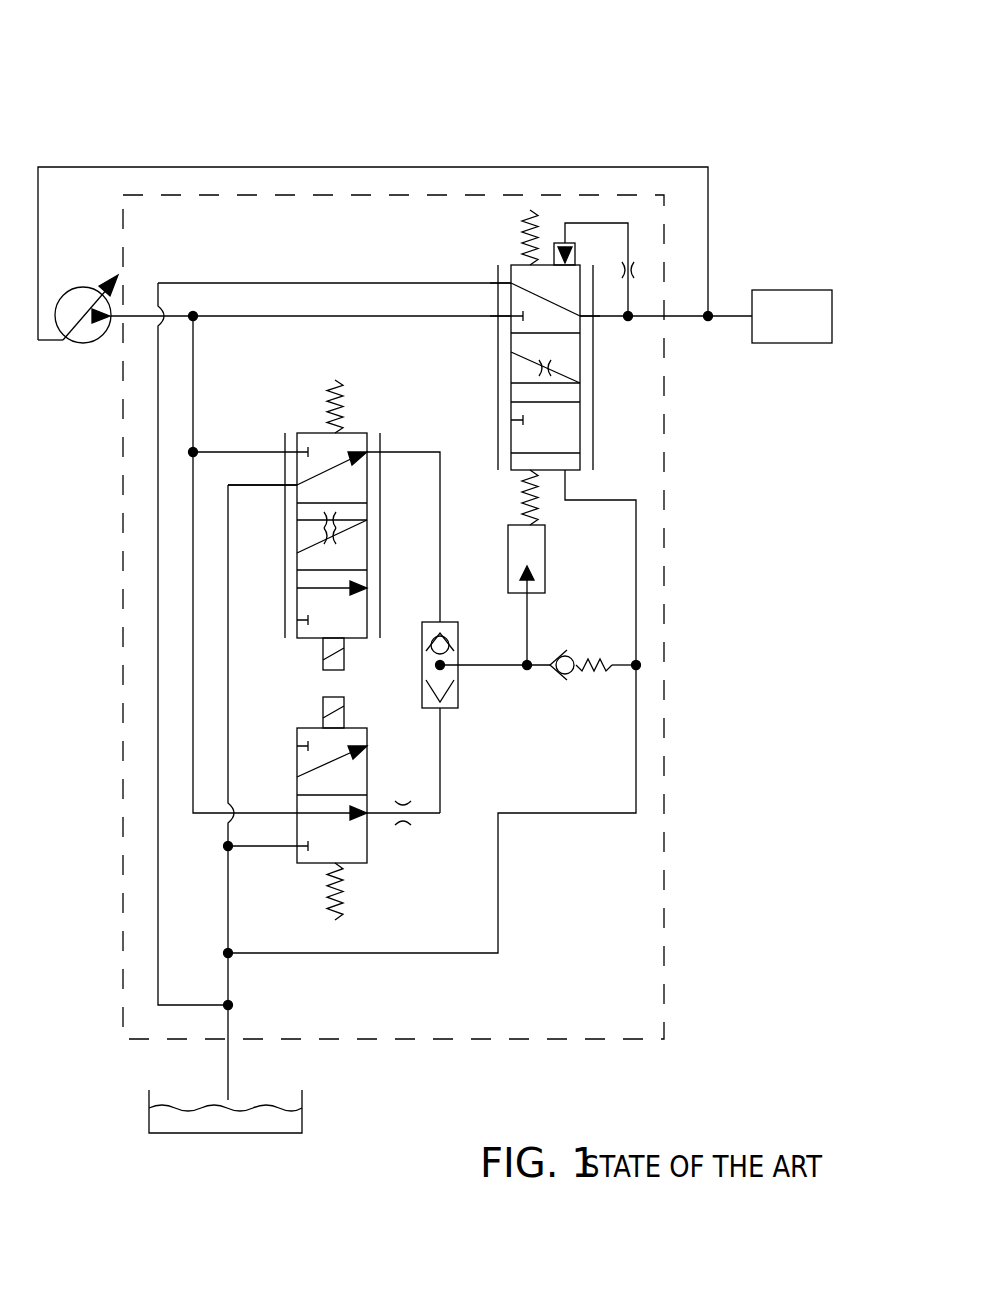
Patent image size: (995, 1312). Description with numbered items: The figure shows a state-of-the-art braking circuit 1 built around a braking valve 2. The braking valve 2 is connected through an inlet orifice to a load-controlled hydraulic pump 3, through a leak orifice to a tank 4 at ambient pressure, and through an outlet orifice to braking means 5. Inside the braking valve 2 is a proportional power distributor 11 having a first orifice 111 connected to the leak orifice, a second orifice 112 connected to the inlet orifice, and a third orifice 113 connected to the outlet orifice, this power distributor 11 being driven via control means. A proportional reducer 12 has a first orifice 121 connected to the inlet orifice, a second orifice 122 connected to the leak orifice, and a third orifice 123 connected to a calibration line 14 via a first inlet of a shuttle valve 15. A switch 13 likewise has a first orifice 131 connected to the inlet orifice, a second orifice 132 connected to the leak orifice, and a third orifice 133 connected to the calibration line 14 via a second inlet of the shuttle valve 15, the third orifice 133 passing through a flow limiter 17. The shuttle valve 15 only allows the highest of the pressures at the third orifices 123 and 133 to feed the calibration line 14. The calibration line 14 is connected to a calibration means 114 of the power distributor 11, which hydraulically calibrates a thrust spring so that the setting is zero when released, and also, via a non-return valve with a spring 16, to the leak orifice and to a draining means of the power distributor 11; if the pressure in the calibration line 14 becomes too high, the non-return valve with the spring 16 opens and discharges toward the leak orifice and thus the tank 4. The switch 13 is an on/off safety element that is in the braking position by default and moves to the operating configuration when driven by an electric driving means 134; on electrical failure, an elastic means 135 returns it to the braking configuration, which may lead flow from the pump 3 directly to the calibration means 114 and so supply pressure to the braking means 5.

The braking circuit 1 is at (200, 96).
The braking valve 2 is at (565, 195).
The load-controlled hydraulic pump 3 is at (82, 345).
The tank 4 is at (287, 1125).
The braking means 5 is at (803, 290).
The proportional power distributor 11 is at (593, 388).
The first orifice of the power distributor 111 is at (500, 282).
The second orifice of the power distributor 112 is at (498, 318).
The third orifice of the power distributor 113 is at (585, 318).
The calibration means 114 is at (547, 532).
The proportional reducer 12 is at (354, 424).
The first orifice of the proportional reducer 121 is at (295, 452).
The second orifice of the proportional reducer 122 is at (297, 485).
The third orifice of the proportional reducer 123 is at (367, 452).
The switch 13 is at (355, 728).
The first orifice of the switch 131 is at (298, 745).
The second orifice of the switch 132 is at (297, 777).
The third orifice of the switch 133 is at (367, 746).
The electric driving means 134 is at (322, 702).
The elastic means 135 is at (340, 913).
The calibration line 14 is at (490, 667).
The shuttle valve 15 is at (458, 630).
The non-return valve with a spring 16 is at (560, 680).
The flow limiter 17 is at (403, 824).